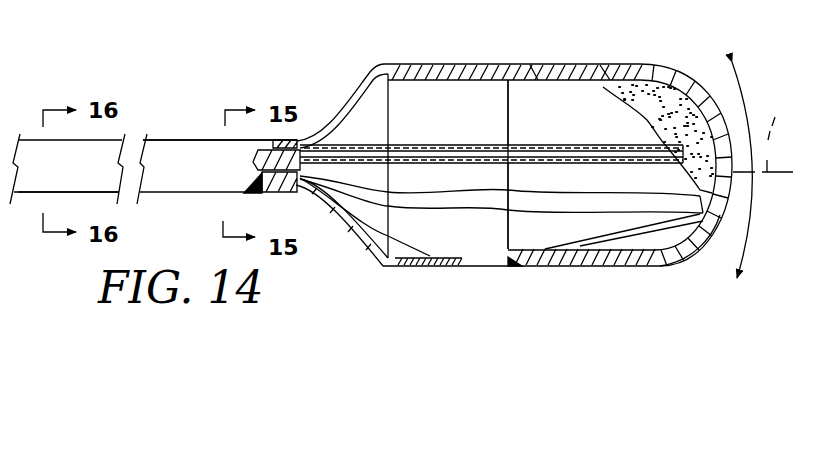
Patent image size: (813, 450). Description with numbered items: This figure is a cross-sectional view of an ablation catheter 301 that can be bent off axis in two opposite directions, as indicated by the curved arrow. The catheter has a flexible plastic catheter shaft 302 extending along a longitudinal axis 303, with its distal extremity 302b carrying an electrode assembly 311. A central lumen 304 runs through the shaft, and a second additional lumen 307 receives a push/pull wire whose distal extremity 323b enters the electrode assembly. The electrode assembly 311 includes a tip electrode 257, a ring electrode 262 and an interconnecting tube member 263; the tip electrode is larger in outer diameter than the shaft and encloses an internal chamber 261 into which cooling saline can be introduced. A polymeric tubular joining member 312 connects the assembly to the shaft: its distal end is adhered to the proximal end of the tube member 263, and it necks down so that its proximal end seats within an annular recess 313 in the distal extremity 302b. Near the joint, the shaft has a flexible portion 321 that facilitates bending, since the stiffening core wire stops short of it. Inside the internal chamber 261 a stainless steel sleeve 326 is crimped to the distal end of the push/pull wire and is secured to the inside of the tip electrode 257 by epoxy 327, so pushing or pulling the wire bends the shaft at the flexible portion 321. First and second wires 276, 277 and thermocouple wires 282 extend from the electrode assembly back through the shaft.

The ablation catheter 301 is at (713, 58).
The catheter shaft 302 is at (27, 131).
The distal extremity 302b is at (47, 184).
The longitudinal axis 303 is at (763, 170).
The central lumen 304 is at (300, 173).
The second additional lumen 307 is at (298, 140).
The electrode assembly 311 is at (661, 60).
The tubular joining member 312 is at (361, 87).
The annular recess 313 is at (255, 185).
The flexible portion 321 is at (218, 142).
The distal extremity 323b is at (477, 150).
The sleeve 326 is at (601, 147).
The epoxy 327 is at (645, 100).
The tip electrode 257 is at (687, 247).
The internal chamber 261 is at (565, 80).
The ring electrode 262 is at (416, 259).
The interconnecting tube member 263 is at (533, 260).
The first wire 276 is at (672, 208).
The second wire 277 is at (428, 257).
The thermocouple wires 282 is at (535, 210).